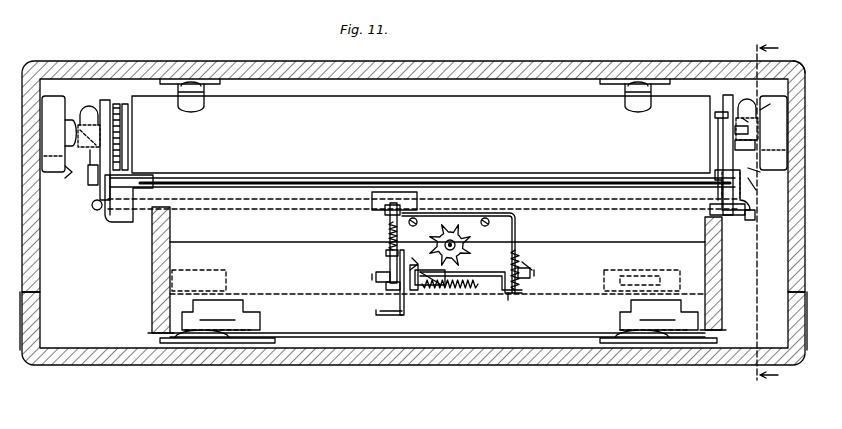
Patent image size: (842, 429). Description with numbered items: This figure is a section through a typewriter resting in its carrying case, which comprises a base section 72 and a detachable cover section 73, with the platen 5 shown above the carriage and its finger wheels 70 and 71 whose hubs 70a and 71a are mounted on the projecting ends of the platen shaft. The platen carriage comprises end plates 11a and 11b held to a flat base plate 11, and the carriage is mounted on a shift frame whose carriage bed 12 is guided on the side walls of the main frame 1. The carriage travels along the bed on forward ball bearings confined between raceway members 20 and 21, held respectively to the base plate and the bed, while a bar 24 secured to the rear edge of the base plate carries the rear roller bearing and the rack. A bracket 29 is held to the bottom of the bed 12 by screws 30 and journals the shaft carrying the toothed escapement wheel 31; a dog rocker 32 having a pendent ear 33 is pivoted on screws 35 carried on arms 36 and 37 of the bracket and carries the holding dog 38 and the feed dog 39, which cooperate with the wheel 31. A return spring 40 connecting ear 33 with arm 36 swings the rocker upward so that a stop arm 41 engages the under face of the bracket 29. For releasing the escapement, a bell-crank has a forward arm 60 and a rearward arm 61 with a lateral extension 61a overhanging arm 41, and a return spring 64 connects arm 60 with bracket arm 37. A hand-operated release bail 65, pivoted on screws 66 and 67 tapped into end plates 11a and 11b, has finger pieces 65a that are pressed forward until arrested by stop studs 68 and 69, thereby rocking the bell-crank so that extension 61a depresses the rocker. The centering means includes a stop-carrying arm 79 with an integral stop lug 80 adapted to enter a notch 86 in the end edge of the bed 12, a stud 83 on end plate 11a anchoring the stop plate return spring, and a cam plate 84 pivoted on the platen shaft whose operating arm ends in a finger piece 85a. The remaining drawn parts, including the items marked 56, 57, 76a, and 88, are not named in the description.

The main frame 1 is at (170, 261).
The platen 5 is at (504, 104).
The carriage base plate 11 is at (318, 177).
The carriage end plate 11a is at (730, 100).
The carriage end plate 11b is at (106, 100).
The carriage bed 12 is at (160, 228).
The raceway member 20 is at (354, 184).
The raceway member 21 is at (414, 258).
The bar 24 is at (122, 224).
The bracket 29 is at (513, 226).
The screws 30 is at (485, 218).
The escapement wheel 31 is at (447, 236).
The dog rocker 32 is at (496, 290).
The pendent ear 33 is at (510, 296).
The screws 35 is at (376, 277).
The bracket arm 36 is at (520, 250).
The bracket arm 37 is at (390, 266).
The holding dog 38 is at (430, 269).
The feed dog 39 is at (458, 278).
The return spring 40 is at (528, 270).
The stop arm 41 is at (394, 288).
The foot of lever 56 is at (378, 316).
The lever rod 57 is at (400, 300).
The bell-crank arm 60 is at (385, 211).
The bell-crank arm 61 is at (386, 254).
The lateral extension 61a is at (414, 290).
The return spring 64 is at (388, 238).
The release bail 65 is at (96, 205).
The finger piece 65a is at (90, 113).
The screw 66 is at (750, 172).
The screw 67 is at (90, 182).
The stop stud 68 is at (773, 133).
The stop stud 69 is at (67, 130).
The finger wheel 70 is at (799, 66).
The hub 70a is at (765, 110).
The finger wheel 71 is at (57, 100).
The hub 71a is at (66, 172).
The base section 72 is at (103, 336).
The cover section 73 is at (306, 84).
The bracket 76a is at (735, 185).
The stop-carrying arm 79 is at (752, 186).
The centering stop lug 80 is at (750, 220).
The stud 83 is at (735, 129).
The cam plate 84 is at (735, 145).
The finger piece 85a is at (720, 114).
The notch 86 is at (712, 209).
The lever 88 is at (742, 118).